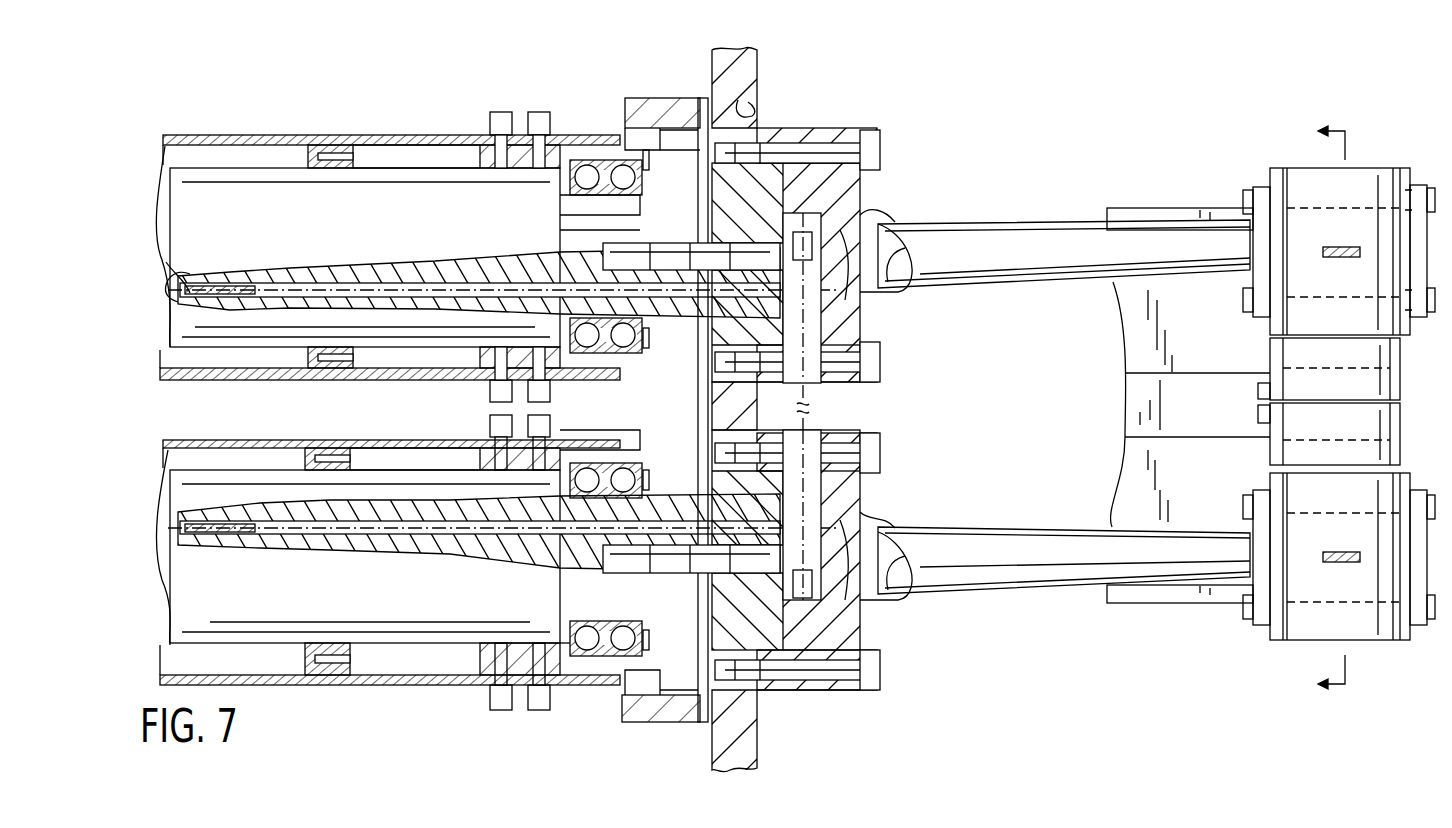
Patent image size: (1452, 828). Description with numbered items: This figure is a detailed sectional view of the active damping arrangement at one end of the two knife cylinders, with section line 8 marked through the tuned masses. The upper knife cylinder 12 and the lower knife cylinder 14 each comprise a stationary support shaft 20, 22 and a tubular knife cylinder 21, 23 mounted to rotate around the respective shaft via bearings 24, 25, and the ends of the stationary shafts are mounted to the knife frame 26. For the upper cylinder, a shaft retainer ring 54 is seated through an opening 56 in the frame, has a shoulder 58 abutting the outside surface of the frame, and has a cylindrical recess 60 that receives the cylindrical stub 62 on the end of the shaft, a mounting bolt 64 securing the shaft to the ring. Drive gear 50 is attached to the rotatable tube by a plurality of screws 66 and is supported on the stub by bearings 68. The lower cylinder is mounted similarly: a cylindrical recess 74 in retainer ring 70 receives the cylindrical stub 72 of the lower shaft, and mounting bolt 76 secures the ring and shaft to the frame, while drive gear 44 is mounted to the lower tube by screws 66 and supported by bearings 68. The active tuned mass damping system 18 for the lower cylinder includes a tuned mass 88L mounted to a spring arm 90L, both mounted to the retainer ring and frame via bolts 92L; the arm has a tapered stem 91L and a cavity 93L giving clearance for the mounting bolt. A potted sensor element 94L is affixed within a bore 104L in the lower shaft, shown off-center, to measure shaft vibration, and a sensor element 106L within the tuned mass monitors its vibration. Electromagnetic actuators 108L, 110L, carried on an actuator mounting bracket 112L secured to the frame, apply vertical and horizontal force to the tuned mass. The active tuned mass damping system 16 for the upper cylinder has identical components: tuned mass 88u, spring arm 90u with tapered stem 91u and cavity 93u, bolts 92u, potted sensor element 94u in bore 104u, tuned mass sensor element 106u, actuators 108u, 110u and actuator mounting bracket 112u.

The section line 8- 8 is at (1327, 409).
The upper knife cylinder 12 is at (314, 132).
The lower knife cylinder 14 is at (260, 690).
The active tuned mass damping system 16 is at (1432, 160).
The active tuned mass damping system 18 is at (1424, 660).
The stationary support shaft 20 is at (232, 176).
The tubular knife cylinder 21 is at (370, 140).
The stationary support shaft 22 is at (190, 480).
The tubular knife cylinder 23 is at (356, 442).
The bearings 24 is at (334, 144).
The bearings 25 is at (318, 446).
The knife frame 26 is at (733, 52).
The drive gear 44 is at (645, 724).
The drive gear 50 is at (676, 98).
The shaft retainer ring 54 is at (860, 190).
The opening 56 is at (793, 185).
The shoulder 58 is at (748, 124).
The cylindrical recess 60 is at (636, 150).
The cylindrical stub 62 is at (566, 210).
The mounting bolt 64 is at (905, 226).
The screws 66 is at (540, 112).
The bearings 68 is at (622, 165).
The retainer ring 70 is at (770, 692).
The cylindrical stub 72 is at (558, 688).
The cylindrical recess 74 is at (703, 722).
The mounting bolt 76 is at (858, 606).
The tuned mass 88u is at (1284, 168).
The tuned mass 88L is at (1280, 640).
The spring arm 90u is at (995, 230).
The spring arm 90L is at (1010, 578).
The tapered stem 91u is at (998, 274).
The tapered stem 91L is at (1000, 537).
The bolts 92u is at (880, 148).
The bolts 92L is at (880, 460).
The cavity 93u is at (878, 288).
The cavity 93L is at (874, 582).
The potted sensor element 94u is at (190, 293).
The potted sensor element 94L is at (190, 530).
The bore 104u is at (270, 292).
The bore 104L is at (368, 525).
The sensor element 106u is at (1335, 260).
The sensor element 106L is at (1335, 556).
The electromagnetic actuator 108u is at (1285, 382).
The electromagnetic actuator 108L is at (1285, 426).
The electromagnetic actuator 110u is at (1297, 270).
The electromagnetic actuator 110L is at (1300, 522).
The actuator mounting bracket 112u is at (1150, 212).
The actuator mounting bracket 112L is at (1125, 604).